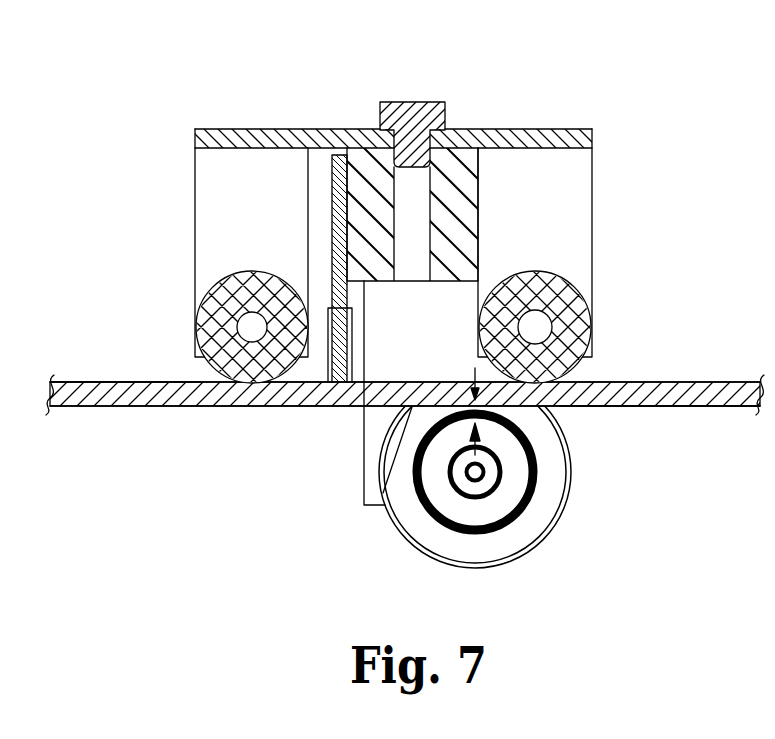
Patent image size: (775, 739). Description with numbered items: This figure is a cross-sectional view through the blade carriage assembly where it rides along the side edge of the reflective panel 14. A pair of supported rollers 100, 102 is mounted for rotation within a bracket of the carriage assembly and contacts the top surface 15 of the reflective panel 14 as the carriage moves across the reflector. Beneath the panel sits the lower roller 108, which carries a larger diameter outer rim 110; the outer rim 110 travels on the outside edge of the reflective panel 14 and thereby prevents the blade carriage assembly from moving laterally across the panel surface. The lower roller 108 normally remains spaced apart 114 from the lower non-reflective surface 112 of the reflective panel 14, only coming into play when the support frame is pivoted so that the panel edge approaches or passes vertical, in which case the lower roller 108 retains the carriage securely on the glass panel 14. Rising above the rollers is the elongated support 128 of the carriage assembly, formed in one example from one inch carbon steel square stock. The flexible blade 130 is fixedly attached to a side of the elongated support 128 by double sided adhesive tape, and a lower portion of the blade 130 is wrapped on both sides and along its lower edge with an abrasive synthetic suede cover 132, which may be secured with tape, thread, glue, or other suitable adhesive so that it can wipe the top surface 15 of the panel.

The reflective panel 14 is at (730, 382).
The top surface 15 is at (70, 382).
The supported roller 100 is at (592, 300).
The supported roller 102 is at (222, 303).
The lower roller 108 is at (517, 477).
The outer rim 110 is at (527, 533).
The lower non-reflective surface 112 is at (627, 407).
The spacing 114 is at (383, 493).
The elongated support 128 is at (463, 185).
The flexible blade 130 is at (330, 263).
The synthetic suede cover 132 is at (328, 346).